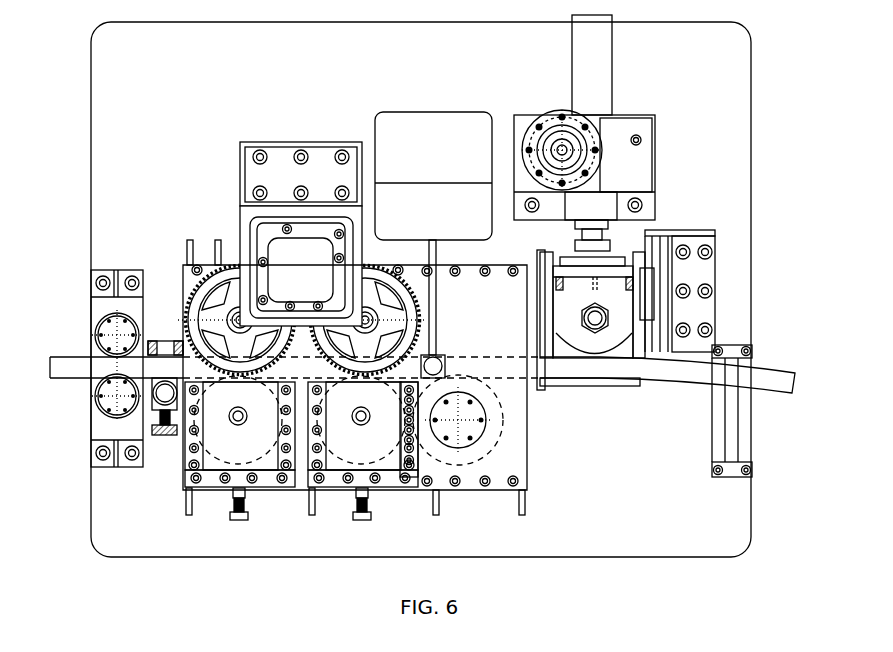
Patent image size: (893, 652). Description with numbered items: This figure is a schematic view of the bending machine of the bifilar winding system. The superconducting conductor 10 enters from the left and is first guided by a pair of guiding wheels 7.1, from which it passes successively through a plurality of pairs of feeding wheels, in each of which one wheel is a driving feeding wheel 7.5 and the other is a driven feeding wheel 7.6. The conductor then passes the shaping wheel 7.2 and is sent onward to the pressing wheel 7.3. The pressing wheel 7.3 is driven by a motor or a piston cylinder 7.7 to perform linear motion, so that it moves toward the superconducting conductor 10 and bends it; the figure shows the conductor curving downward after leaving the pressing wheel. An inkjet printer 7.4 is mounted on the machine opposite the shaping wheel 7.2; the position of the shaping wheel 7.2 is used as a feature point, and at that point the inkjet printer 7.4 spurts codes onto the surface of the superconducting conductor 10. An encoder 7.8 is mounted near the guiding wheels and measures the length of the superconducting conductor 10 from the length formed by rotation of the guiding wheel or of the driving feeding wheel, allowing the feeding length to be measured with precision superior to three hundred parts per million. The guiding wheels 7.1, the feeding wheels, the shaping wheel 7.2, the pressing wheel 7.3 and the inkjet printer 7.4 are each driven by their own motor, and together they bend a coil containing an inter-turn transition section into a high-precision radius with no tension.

The guiding wheels 7.1 is at (100, 328).
The shaping wheel 7.2 is at (500, 425).
The pressing wheel 7.3 is at (598, 352).
The inkjet printer 7.4 is at (430, 135).
The driving feeding wheel 7.5 is at (200, 315).
The driven feeding wheel 7.6 is at (250, 455).
The piston cylinder 7.7 is at (598, 72).
The encoder 7.8 is at (158, 410).
The superconducting conductor 10 is at (676, 372).